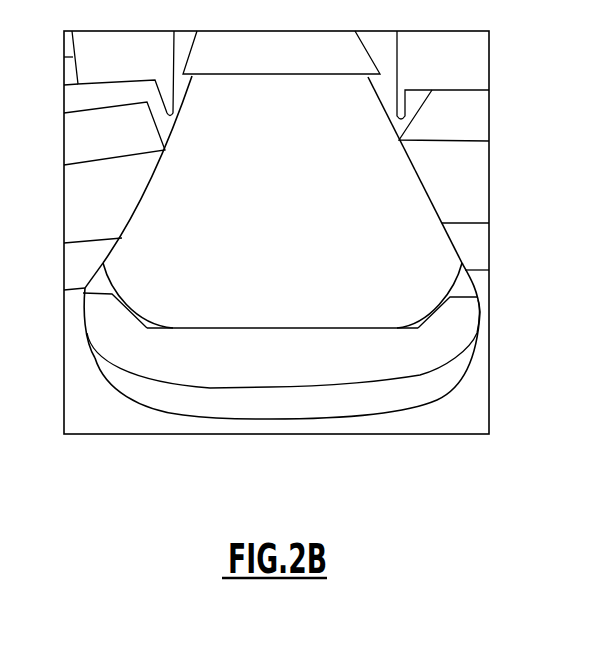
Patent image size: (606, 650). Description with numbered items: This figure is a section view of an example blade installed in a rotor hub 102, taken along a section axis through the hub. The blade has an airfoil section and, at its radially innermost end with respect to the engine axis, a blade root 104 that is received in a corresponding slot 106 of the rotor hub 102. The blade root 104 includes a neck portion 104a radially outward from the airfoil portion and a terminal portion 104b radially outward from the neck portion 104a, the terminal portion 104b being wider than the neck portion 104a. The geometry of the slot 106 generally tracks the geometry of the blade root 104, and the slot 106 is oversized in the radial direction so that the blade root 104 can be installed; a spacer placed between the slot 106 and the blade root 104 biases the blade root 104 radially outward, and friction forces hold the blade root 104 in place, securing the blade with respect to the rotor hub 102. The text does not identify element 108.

The rotor hub 102 is at (458, 183).
The blade root 104 is at (217, 287).
The neck portion 104a is at (433, 153).
The terminal portion 104b is at (483, 243).
The slot 106 is at (467, 288).
The bumper 108 is at (388, 362).